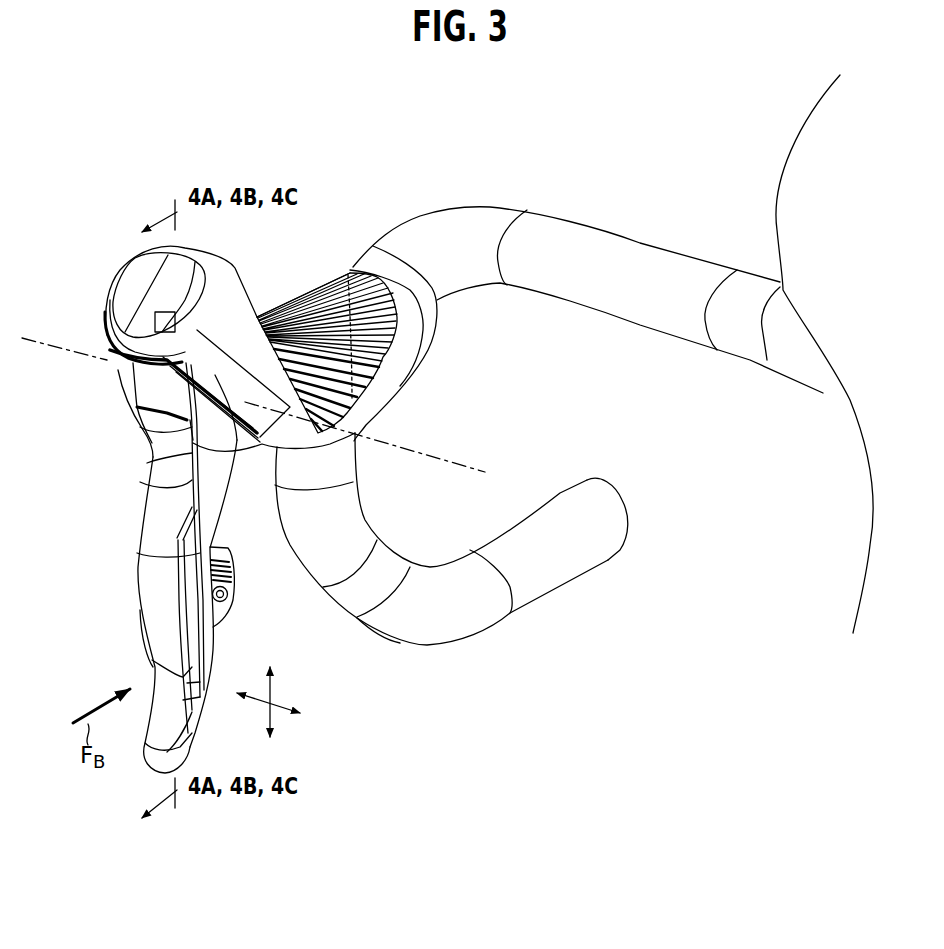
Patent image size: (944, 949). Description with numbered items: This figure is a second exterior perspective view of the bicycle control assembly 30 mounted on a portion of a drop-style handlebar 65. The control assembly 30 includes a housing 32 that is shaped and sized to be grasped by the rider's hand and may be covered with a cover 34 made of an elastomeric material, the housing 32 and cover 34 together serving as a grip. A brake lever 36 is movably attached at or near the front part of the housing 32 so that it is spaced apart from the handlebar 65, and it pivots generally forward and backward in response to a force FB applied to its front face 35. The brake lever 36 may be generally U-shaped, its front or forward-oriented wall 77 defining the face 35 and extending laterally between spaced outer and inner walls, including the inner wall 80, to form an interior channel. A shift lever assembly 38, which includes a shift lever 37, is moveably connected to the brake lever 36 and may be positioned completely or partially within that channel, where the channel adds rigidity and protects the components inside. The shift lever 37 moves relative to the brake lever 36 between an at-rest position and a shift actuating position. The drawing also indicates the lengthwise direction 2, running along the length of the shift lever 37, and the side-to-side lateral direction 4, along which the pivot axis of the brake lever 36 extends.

The bicycle control assembly 30 is at (95, 672).
The housing 32 is at (128, 390).
The cover 34 is at (307, 300).
The front face 35 is at (147, 595).
The brake lever 36 is at (152, 500).
The shift lever 37 is at (213, 553).
The shift lever assembly 38 is at (70, 350).
The handlebar 65 is at (603, 307).
The forward-oriented wall 77 is at (145, 563).
The inner wall 80 is at (195, 540).
The lateral direction 4 is at (283, 700).
The lengthwise direction 2 is at (277, 720).